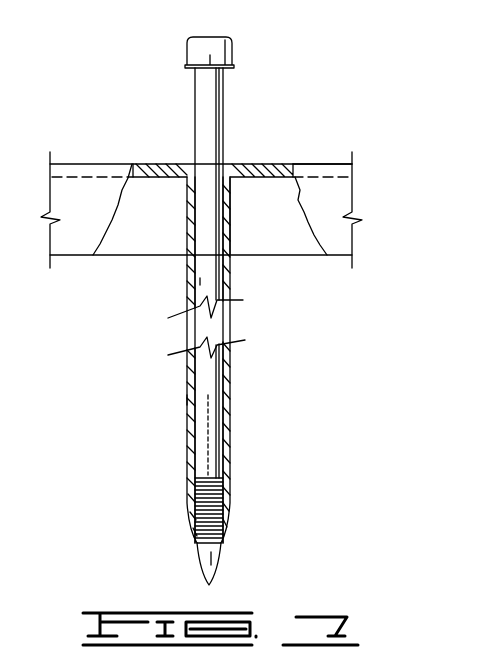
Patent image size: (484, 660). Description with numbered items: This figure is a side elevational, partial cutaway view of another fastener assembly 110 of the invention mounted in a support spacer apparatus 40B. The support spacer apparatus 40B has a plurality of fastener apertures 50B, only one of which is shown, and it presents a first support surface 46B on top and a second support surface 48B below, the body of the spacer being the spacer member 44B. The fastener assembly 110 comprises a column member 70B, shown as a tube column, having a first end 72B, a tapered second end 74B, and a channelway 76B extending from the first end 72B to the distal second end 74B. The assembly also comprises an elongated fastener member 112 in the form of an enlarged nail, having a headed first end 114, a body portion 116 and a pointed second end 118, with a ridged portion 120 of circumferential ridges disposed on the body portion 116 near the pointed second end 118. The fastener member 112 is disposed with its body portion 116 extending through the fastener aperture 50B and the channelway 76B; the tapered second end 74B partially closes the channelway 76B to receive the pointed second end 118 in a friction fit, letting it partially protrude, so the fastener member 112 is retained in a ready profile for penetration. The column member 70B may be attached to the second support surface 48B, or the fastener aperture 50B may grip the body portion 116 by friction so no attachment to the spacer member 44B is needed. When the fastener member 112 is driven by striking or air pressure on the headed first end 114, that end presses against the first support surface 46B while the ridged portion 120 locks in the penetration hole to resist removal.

The support spacer apparatus 40B is at (110, 162).
The spacer member 44B is at (181, 163).
The first support surface 46B is at (268, 164).
The second support surface 48B is at (240, 180).
The fastener aperture 50B is at (228, 163).
The column member 70B is at (230, 283).
The first end 72B is at (187, 220).
The second end 74B is at (228, 522).
The channelway 76B is at (225, 396).
The fastener assembly 110 is at (207, 303).
The fastener member 112 is at (208, 104).
The headed first end 114 is at (215, 50).
The body portion 116 is at (203, 282).
The pointed second end 118 is at (205, 552).
The ridged portion 120 is at (214, 493).